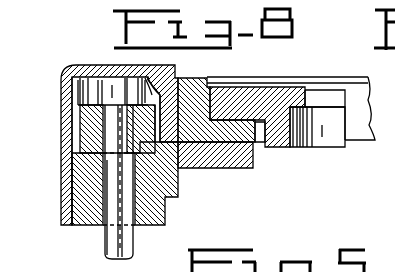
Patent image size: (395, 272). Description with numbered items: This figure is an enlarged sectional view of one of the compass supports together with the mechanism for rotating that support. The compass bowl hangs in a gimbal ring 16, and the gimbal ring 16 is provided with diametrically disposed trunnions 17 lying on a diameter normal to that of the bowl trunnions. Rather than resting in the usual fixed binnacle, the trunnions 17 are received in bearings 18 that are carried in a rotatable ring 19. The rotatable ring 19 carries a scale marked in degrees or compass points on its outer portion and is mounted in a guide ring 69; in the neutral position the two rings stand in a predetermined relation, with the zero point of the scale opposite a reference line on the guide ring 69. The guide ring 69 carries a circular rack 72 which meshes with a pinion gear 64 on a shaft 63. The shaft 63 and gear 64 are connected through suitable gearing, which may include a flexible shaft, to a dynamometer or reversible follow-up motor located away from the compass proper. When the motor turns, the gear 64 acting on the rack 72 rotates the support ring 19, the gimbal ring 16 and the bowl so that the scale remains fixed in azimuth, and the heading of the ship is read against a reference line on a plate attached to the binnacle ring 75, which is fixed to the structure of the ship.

The gimbal ring 16 is at (337, 142).
The trunnions 17 is at (260, 82).
The bearings 18 is at (255, 142).
The rotatable ring 19 is at (205, 79).
The shaft 63 is at (108, 238).
The gear 64 is at (80, 122).
The guide ring 69 is at (210, 168).
The circular rack 72 is at (150, 97).
The binnacle ring 75 is at (128, 87).